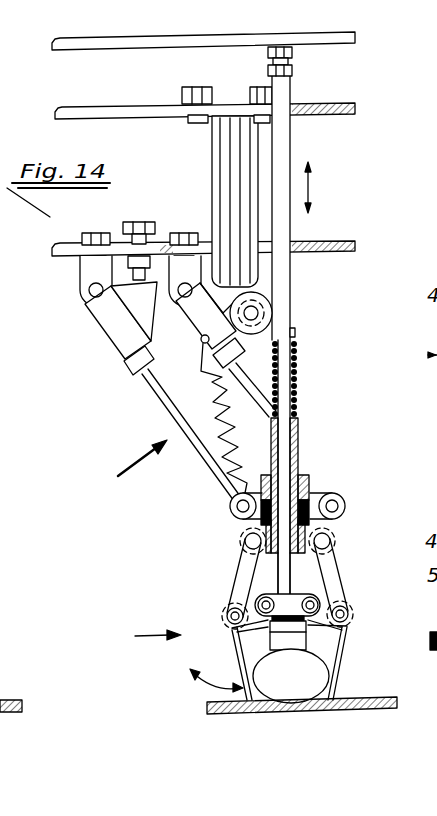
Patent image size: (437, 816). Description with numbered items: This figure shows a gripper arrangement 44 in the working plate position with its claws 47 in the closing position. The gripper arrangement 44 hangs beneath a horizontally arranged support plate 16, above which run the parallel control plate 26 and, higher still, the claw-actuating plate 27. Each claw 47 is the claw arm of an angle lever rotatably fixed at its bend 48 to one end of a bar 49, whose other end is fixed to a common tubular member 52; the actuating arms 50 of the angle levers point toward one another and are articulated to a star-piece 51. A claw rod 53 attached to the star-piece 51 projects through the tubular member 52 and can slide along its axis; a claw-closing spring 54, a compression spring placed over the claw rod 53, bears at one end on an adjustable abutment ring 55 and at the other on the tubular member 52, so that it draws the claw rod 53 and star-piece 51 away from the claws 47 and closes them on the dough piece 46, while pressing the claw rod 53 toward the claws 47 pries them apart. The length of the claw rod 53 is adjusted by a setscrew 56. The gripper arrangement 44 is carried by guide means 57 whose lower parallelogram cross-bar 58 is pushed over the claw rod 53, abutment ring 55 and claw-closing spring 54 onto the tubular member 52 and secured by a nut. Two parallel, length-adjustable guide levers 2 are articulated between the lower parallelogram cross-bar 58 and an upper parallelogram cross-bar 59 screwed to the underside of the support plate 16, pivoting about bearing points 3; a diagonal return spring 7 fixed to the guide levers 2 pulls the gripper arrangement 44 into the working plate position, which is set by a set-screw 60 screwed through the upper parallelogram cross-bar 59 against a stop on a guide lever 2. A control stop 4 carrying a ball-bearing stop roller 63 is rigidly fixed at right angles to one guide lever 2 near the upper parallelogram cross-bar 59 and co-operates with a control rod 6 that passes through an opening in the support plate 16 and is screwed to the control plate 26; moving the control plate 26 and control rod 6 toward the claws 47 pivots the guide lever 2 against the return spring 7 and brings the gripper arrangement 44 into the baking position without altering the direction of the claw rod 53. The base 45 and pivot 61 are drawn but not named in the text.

The guide lever 2 is at (118, 335).
The bearing point 3 is at (184, 297).
The control stop 4 is at (292, 328).
The control rod 6 is at (228, 157).
The return spring 7 is at (188, 414).
The support plate 16 is at (332, 242).
The control plate 26 is at (135, 120).
The claw-actuating plate 27 is at (130, 42).
The gripper arrangement 44 is at (231, 627).
The base 45 is at (378, 705).
The dough piece 46 is at (312, 675).
The claw 47 is at (277, 642).
The bend 48 is at (342, 614).
The bar 49 is at (330, 570).
The actuating arm 50 is at (322, 612).
The star-piece 51 is at (232, 577).
The tubular member 52 is at (372, 509).
The claw rod 53 is at (348, 493).
The claw-closing spring 54 is at (297, 413).
The abutment ring 55 is at (294, 337).
The setscrew 56 is at (290, 55).
The guide means 57 is at (128, 470).
The lower parallelogram cross-bar 58 is at (230, 517).
The upper parallelogram cross-bar 59 is at (80, 281).
The set-screw for the working plate position 60 is at (150, 231).
The pivot pin 61 is at (71, 316).
The stop roller 63 is at (262, 309).